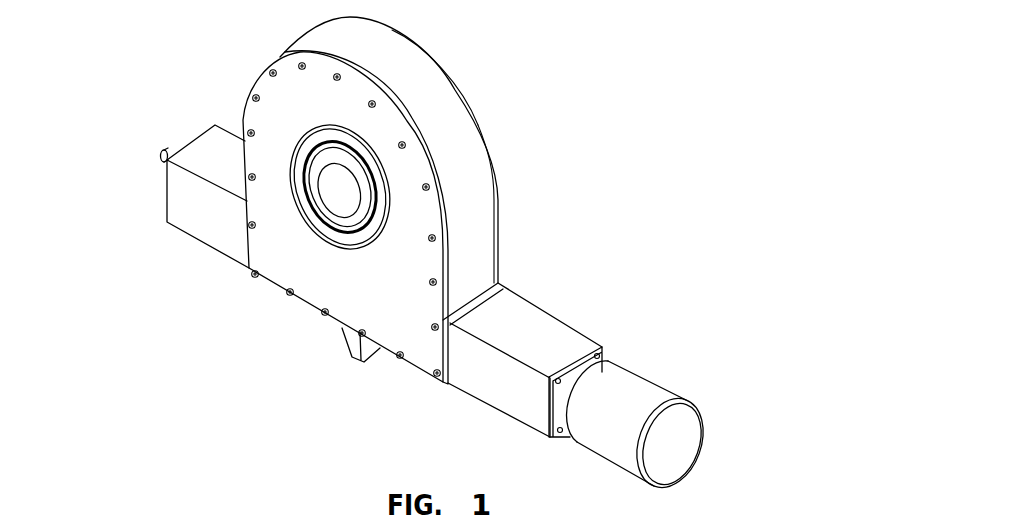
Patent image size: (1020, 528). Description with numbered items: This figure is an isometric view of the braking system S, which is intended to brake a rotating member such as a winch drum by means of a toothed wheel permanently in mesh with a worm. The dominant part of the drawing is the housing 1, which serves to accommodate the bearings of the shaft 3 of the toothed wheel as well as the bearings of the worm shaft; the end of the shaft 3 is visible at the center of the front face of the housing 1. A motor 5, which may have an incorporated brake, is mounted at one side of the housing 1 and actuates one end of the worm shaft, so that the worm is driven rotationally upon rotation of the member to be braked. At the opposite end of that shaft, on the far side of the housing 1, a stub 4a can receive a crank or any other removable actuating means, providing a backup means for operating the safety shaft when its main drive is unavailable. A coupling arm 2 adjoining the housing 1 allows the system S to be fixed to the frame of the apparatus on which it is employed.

The braking system S is at (520, 86).
The housing 1 is at (471, 189).
The coupling arm 2 is at (345, 365).
The shaft of the wheel 3 is at (323, 203).
The stub 4a is at (159, 185).
The motor 5 is at (617, 396).